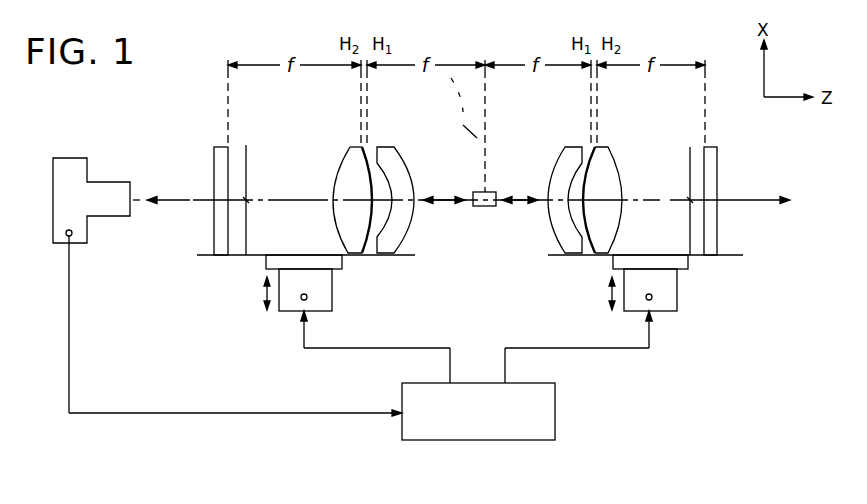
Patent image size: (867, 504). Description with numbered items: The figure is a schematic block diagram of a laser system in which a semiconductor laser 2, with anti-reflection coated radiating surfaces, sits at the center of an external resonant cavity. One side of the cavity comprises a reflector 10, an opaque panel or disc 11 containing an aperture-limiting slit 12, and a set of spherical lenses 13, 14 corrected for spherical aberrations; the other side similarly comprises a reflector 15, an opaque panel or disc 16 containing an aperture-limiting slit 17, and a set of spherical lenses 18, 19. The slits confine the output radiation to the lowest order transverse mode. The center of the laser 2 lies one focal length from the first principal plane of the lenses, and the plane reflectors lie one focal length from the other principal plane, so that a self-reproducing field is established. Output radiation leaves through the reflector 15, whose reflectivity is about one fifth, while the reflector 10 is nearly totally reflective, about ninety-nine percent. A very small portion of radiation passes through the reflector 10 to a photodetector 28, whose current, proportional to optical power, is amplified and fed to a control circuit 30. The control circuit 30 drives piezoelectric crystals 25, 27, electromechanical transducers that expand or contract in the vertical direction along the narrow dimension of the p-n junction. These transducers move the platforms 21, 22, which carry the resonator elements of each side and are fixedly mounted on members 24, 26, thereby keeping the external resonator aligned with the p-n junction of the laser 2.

The semiconductor laser 2 is at (470, 185).
The reflector 10 is at (216, 147).
The opaque panel or disc 11 is at (247, 228).
The aperture-limiting slit 12 is at (246, 200).
The spherical lens 13 is at (356, 147).
The spherical lens 14 is at (391, 147).
The reflector 15 is at (716, 147).
The opaque panel or disc 16 is at (690, 148).
The aperture-limiting slit 17 is at (690, 200).
The spherical lens 18 is at (612, 183).
The spherical lens 19 is at (565, 183).
The platform 21 is at (403, 257).
The platform 22 is at (592, 257).
The member 24 is at (266, 262).
The piezoelectric crystal 25 is at (333, 300).
The member 26 is at (689, 262).
The piezoelectric crystal 27 is at (678, 300).
The photodetector 28 is at (111, 183).
The control circuit 30 is at (556, 406).